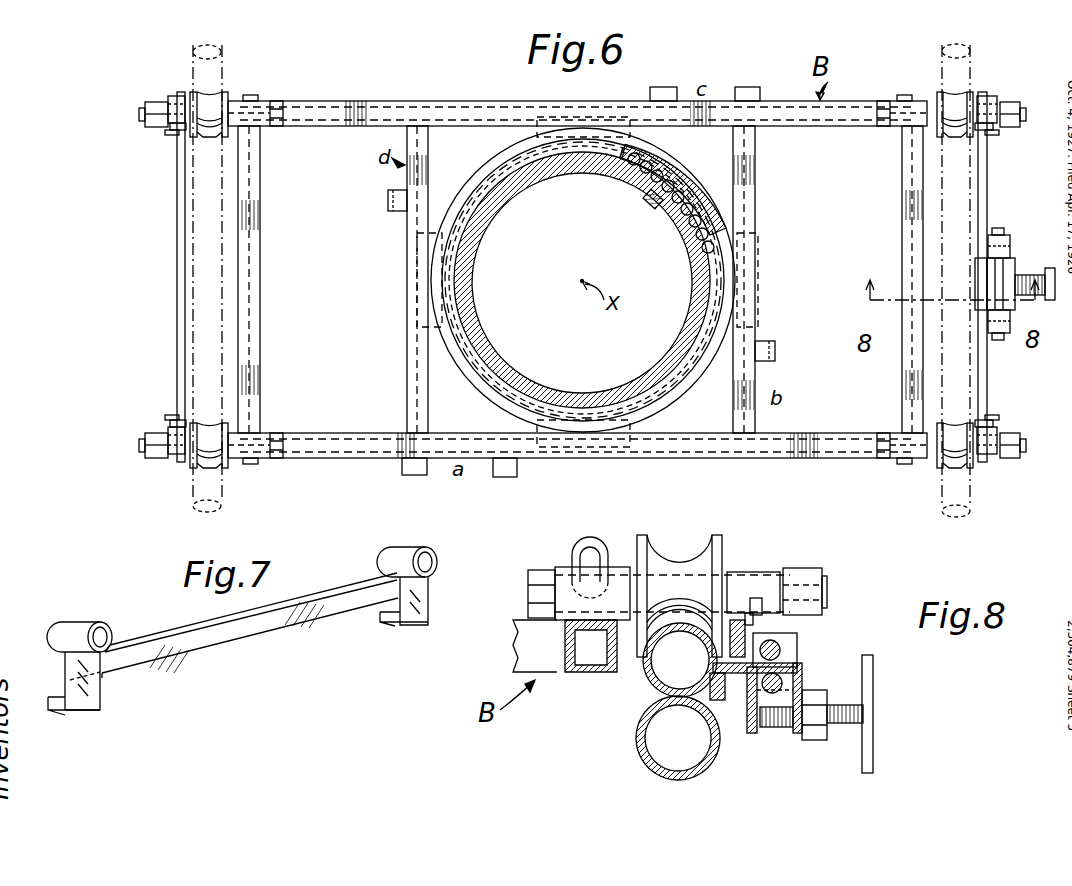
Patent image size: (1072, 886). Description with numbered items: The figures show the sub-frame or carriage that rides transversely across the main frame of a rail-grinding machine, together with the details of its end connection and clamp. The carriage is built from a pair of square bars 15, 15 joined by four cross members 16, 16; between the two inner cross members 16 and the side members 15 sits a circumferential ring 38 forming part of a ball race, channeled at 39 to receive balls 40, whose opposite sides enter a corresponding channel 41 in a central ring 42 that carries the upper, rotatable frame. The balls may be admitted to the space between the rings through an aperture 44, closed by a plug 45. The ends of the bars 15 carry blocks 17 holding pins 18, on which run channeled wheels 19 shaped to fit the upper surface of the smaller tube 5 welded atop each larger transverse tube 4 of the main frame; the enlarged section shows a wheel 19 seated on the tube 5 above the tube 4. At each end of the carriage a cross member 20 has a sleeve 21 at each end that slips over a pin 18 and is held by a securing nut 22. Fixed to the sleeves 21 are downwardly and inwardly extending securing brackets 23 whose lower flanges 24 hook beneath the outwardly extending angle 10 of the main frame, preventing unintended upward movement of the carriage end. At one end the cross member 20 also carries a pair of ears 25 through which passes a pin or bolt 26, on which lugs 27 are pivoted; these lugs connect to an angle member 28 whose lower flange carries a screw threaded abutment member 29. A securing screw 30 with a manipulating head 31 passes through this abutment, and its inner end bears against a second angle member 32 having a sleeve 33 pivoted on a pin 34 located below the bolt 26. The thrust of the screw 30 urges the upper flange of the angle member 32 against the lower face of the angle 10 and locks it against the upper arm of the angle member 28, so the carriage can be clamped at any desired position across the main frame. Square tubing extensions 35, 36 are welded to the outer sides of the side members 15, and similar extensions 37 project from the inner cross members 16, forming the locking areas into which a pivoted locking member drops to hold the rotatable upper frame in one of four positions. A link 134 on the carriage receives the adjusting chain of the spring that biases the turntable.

In FIG. 8, the tube 4 is at (640, 742).
In FIG. 6, the smaller tube 5 is at (192, 52).
In FIG. 8, the smaller tube 5 is at (650, 682).
In FIG. 8, the angle 10 is at (718, 700).
In FIG. 6, the square bar 15 is at (343, 118).
In FIG. 8, the square bar 15 is at (530, 660).
In FIG. 6, the cross member 16 is at (262, 238).
In FIG. 8, the cross member 16 is at (580, 672).
In FIG. 6, the block 17 is at (262, 128).
In FIG. 8, the block 17 is at (560, 568).
In FIG. 6, the pin 18 is at (139, 116).
In FIG. 8, the pin 18 is at (828, 585).
In FIG. 6, the channeled wheel 19 is at (210, 100).
In FIG. 8, the channeled wheel 19 is at (662, 565).
In FIG. 6, the cross member 20 is at (178, 212).
In FIG. 7, the cross member 20 is at (322, 598).
In FIG. 8, the cross member 20 is at (738, 620).
In FIG. 6, the sleeve 21 is at (172, 130).
In FIG. 7, the sleeve 21 is at (80, 622).
In FIG. 8, the sleeve 21 is at (752, 605).
In FIG. 6, the securing nut 22 is at (148, 125).
In FIG. 8, the securing nut 22 is at (805, 568).
In FIG. 6, the securing bracket 23 is at (166, 100).
In FIG. 7, the securing bracket 23 is at (100, 692).
In FIG. 8, the securing bracket 23 is at (757, 598).
In FIG. 6, the flange 24 is at (186, 96).
In FIG. 7, the flange 24 is at (55, 712).
In FIG. 8, the flange 24 is at (730, 690).
In FIG. 6, the ear 25 is at (1002, 232).
In FIG. 6, the pin or bolt 26 is at (1005, 270).
In FIG. 8, the pin or bolt 26 is at (782, 650).
In FIG. 6, the lug 27 is at (1010, 246).
In FIG. 8, the lug 27 is at (785, 650).
In FIG. 6, the angle member 28 is at (1025, 277).
In FIG. 8, the angle member 28 is at (782, 683).
In FIG. 8, the screw threaded abutment member 29 is at (815, 740).
In FIG. 6, the securing screw 30 is at (1048, 300).
In FIG. 8, the securing screw 30 is at (850, 714).
In FIG. 8, the manipulating head 31 is at (870, 670).
In FIG. 8, the angle member 32 is at (752, 735).
In FIG. 8, the sleeve 33 is at (802, 680).
In FIG. 6, the pin 34 is at (990, 270).
In FIG. 8, the pin 34 is at (802, 700).
In FIG. 6, the square tubing extension 35 is at (748, 87).
In FIG. 6, the square tubing extension 36 is at (665, 87).
In FIG. 6, the square tubing extension 37 is at (388, 200).
In FIG. 6, the circumferential ring 38 is at (490, 165).
In FIG. 6, the channel 39 is at (675, 165).
In FIG. 6, the ball 40 is at (702, 197).
In FIG. 6, the channel 41 is at (680, 215).
In FIG. 6, the central ring 42 is at (495, 203).
In FIG. 6, the aperture 44 is at (640, 185).
In FIG. 6, the plug 45 is at (655, 208).
In FIG. 6, the link 134 is at (252, 95).
In FIG. 8, the link 134 is at (592, 540).